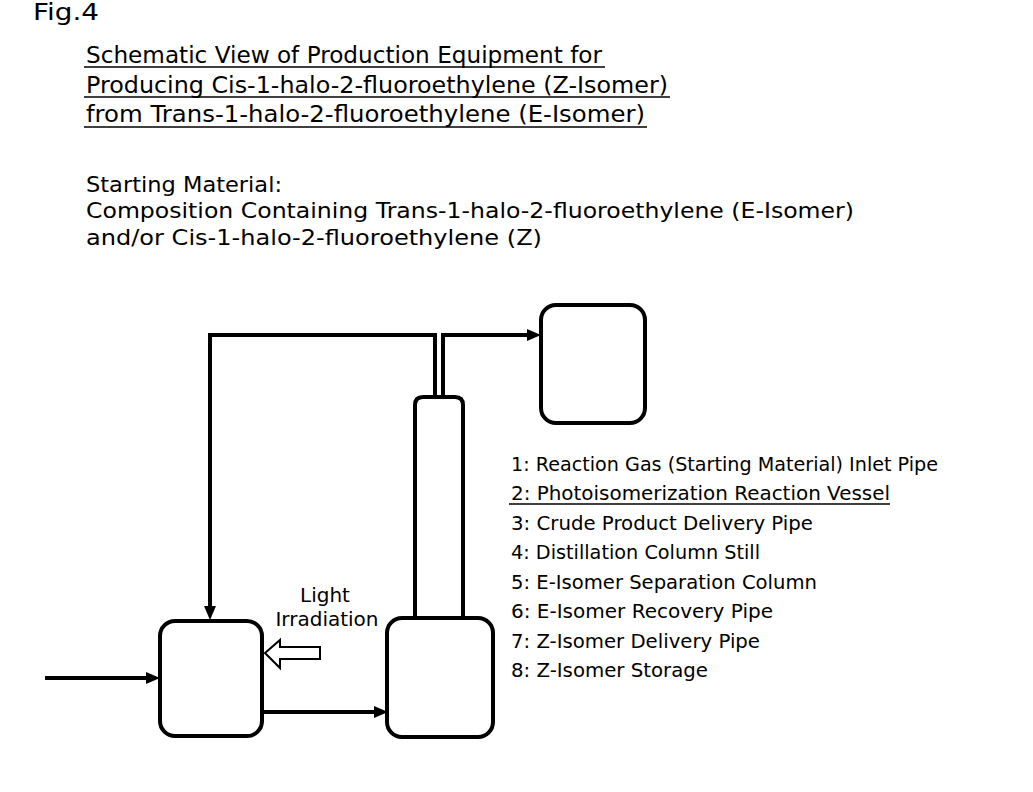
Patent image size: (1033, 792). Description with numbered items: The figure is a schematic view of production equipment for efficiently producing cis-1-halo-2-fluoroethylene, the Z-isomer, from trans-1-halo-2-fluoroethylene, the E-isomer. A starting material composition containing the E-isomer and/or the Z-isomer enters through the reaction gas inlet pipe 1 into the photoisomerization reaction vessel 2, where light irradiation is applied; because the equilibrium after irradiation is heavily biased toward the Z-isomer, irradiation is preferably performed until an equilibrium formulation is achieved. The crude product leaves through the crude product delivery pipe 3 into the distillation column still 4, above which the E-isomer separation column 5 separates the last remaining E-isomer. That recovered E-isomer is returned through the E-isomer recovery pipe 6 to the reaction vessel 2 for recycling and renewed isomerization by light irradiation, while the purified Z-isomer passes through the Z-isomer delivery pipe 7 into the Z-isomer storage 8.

The reaction gas inlet pipe 1 is at (102, 662).
The photoisomerization reaction vessel 2 is at (211, 678).
The crude product delivery pipe 3 is at (325, 695).
The distillation column still 4 is at (440, 677).
The E-isomer separation column 5 is at (439, 507).
The E-isomer recovery pipe 6 is at (319, 457).
The Z-isomer delivery pipe 7 is at (492, 348).
The Z-isomer storage 8 is at (593, 364).